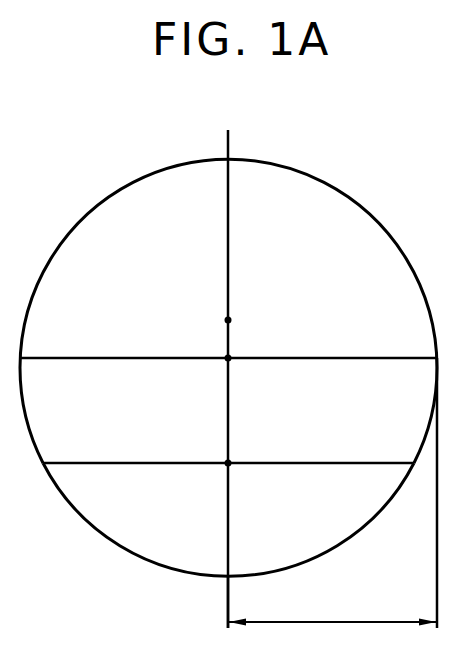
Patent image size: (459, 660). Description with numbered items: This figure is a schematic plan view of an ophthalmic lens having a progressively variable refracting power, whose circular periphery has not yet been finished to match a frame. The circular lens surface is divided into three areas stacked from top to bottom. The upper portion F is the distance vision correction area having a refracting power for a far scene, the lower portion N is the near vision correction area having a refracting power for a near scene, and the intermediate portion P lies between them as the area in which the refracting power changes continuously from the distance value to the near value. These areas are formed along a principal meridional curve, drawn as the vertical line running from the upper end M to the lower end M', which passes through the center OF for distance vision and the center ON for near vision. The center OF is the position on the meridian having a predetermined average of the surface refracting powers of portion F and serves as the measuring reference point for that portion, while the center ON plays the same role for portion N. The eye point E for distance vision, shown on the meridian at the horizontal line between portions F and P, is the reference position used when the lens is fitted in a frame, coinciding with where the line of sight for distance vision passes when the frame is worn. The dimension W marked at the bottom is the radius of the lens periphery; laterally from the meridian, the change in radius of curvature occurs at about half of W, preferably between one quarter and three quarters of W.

The principal meridional curve end point M is at (243, 370).
The principal meridional curve end point M' is at (246, 602).
The center for distance vision OF is at (250, 308).
The eye point for distance vision E is at (228, 344).
The center for near vision ON is at (251, 446).
The portion for distance vision F is at (228, 311).
The intermediate portion P is at (228, 426).
The portion for near vision N is at (228, 519).
The radius of the periphery of the lens W is at (332, 493).